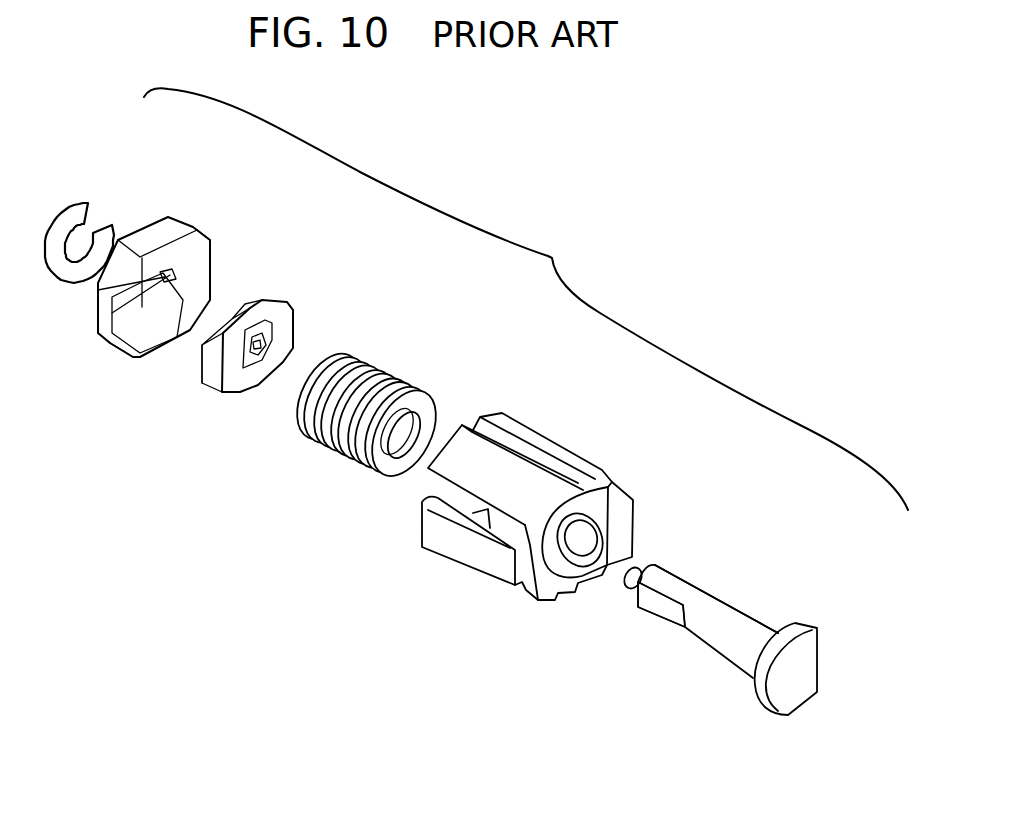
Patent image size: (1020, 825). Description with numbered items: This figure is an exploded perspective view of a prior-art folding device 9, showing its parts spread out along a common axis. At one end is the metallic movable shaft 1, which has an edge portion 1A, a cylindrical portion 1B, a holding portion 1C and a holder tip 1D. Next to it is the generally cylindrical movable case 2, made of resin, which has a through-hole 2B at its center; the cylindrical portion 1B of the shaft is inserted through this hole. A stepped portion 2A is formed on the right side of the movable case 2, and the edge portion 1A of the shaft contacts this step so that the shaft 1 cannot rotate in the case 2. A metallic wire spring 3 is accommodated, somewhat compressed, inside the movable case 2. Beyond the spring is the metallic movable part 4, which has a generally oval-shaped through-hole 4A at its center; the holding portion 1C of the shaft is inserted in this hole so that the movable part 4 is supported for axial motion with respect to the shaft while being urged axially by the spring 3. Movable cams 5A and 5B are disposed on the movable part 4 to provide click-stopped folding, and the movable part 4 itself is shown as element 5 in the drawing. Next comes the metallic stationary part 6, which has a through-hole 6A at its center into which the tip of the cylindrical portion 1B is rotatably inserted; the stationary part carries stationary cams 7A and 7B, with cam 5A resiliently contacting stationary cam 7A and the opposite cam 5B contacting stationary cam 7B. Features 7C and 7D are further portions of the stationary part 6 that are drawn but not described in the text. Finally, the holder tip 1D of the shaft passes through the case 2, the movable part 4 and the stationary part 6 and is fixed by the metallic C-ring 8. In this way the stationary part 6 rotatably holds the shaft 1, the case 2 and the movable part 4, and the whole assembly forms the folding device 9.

The movable shaft 1 is at (723, 580).
The edge portion 1A is at (820, 657).
The cylindrical portion 1B is at (745, 618).
The holding portion 1C is at (664, 613).
The holder tip 1D is at (627, 587).
The movable case 2 is at (537, 448).
The stepped portion 2A is at (622, 508).
The through-hole 2B is at (568, 548).
The spring 3 is at (365, 362).
The movable part 4 is at (272, 317).
The through-hole 4A is at (250, 350).
The washer plate 5 is at (247, 346).
The movable cam 5A is at (203, 377).
The movable cam 5B is at (297, 307).
The stationary part 6 is at (167, 232).
The through-hole 6A is at (137, 357).
The stationary cam 7A is at (110, 338).
The stationary cam 7B is at (210, 243).
The nut opening 7C is at (147, 277).
The nut key 7D is at (140, 273).
The C-ring 8 is at (107, 207).
The folding device 9 is at (574, 247).